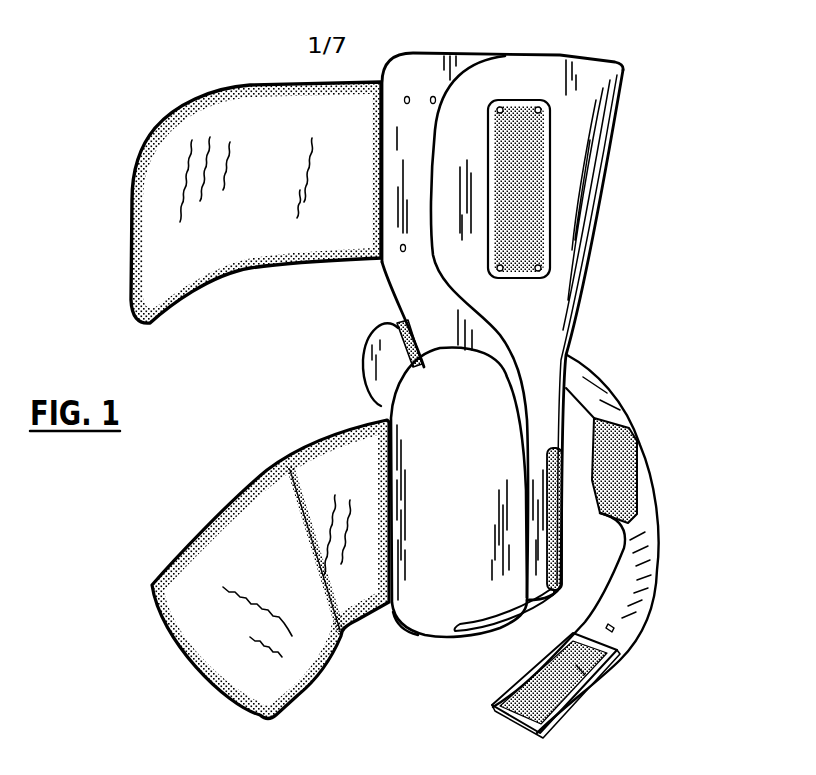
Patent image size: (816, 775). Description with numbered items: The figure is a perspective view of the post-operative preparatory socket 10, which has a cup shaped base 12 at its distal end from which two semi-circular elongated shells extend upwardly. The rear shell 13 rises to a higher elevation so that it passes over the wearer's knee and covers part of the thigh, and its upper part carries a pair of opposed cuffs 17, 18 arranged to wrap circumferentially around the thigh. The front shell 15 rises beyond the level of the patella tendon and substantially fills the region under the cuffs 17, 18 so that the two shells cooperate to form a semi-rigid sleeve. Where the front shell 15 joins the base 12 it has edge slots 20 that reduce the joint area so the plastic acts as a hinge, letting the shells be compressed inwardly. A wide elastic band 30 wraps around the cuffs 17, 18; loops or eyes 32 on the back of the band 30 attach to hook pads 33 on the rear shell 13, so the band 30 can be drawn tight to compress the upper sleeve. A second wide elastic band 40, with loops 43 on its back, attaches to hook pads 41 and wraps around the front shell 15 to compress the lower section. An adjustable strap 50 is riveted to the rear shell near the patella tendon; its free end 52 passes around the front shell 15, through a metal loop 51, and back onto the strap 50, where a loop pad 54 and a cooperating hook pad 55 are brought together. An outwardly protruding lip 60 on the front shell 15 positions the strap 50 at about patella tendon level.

The post-operative preparatory socket 10 is at (606, 294).
The cup shaped base 12 is at (421, 634).
The rear shell 13 is at (615, 125).
The front shell 15 is at (390, 418).
The cuff 17 is at (507, 75).
The cuff 18 is at (420, 52).
The edge slot 20 is at (507, 630).
The wide elastic band 30 is at (160, 113).
The loops or eyes 32 is at (313, 137).
The hook pad 33 is at (542, 125).
The second wide elastic band 40 is at (152, 583).
The hook pad 41 is at (563, 542).
The loops or eyes 43 is at (272, 612).
The adjustable strap 50 is at (652, 580).
The metal loop 51 is at (410, 330).
The free end 52 is at (557, 720).
The loop pad 54 is at (633, 452).
The hook pad 55 is at (590, 673).
The outwardly protruding lip 60 is at (370, 333).